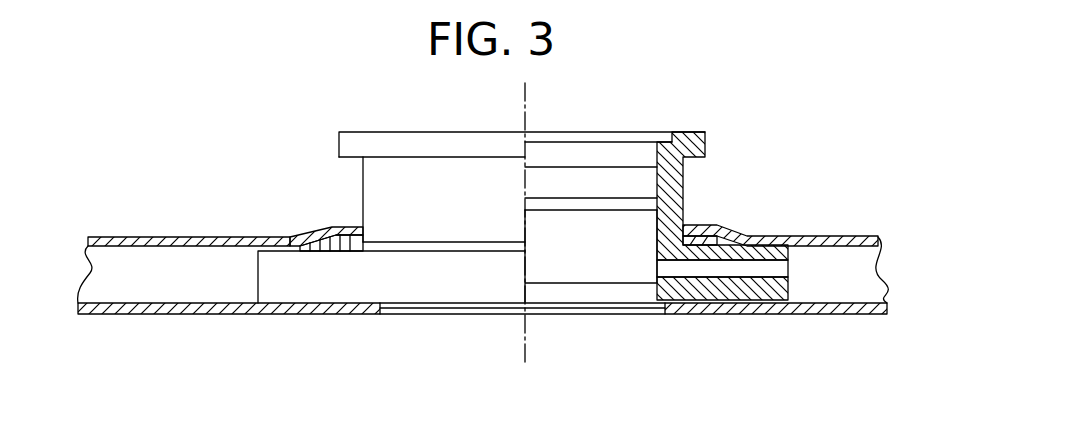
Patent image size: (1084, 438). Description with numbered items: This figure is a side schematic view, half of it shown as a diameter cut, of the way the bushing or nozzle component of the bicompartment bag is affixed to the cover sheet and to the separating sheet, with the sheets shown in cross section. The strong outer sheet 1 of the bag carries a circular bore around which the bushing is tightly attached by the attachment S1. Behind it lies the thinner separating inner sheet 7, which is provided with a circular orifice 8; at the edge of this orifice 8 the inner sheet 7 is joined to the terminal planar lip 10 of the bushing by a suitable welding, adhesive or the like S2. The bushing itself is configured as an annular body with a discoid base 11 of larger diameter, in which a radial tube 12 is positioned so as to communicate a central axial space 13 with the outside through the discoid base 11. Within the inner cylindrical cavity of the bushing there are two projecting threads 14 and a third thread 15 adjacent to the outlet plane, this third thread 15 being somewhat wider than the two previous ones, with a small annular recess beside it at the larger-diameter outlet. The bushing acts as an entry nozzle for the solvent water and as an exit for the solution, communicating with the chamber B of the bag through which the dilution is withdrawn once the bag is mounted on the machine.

The outer sheet 1 is at (147, 236).
The separating inner sheet 7 is at (192, 303).
The tight attachment S1 is at (293, 239).
The welding or adhesive attachment S2 is at (717, 303).
The circular orifice 8 is at (558, 322).
The terminal planar lip 10 is at (303, 315).
The discoid base 11 is at (432, 303).
The radial tube 12 is at (773, 266).
The central axial space 13 is at (613, 272).
The projecting threads 14 is at (575, 206).
The third thread 15 is at (585, 152).
The chamber B is at (853, 270).